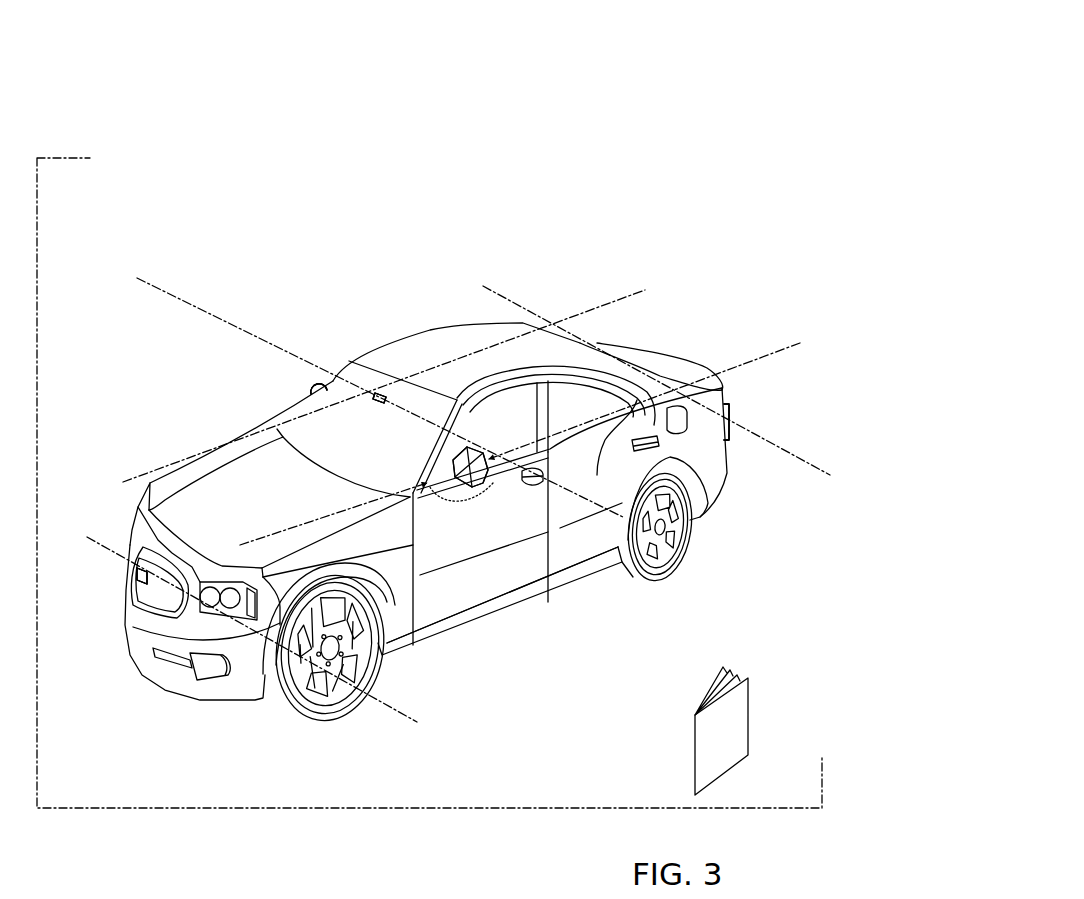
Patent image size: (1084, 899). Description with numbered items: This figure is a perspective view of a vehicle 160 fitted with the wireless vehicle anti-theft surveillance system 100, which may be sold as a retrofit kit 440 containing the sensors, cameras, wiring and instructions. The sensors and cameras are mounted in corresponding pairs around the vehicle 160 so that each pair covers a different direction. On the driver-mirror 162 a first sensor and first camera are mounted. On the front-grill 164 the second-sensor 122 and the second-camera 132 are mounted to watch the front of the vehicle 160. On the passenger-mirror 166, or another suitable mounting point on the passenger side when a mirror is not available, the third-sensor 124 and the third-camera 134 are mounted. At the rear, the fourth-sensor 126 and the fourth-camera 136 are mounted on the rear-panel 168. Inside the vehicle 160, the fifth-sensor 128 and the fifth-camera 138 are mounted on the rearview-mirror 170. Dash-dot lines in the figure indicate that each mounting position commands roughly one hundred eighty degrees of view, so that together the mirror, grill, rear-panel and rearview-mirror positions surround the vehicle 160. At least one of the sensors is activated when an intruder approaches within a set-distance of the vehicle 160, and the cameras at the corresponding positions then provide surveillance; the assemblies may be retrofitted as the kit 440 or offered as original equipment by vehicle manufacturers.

The wireless vehicle anti-theft surveillance system 100 is at (652, 80).
The kit 440 is at (664, 122).
The second-sensor 122 is at (141, 567).
The second-camera 132 is at (136, 576).
The front-grill 164 is at (146, 597).
The third-sensor 124 is at (306, 393).
The third-camera 134 is at (304, 400).
The passenger-mirror 166 is at (313, 378).
The fifth-camera 138 is at (370, 390).
The rearview-mirror 170 is at (365, 389).
The fifth-sensor 128 is at (369, 402).
The driver-mirror 162 is at (462, 446).
The fourth-sensor 126 is at (733, 408).
The rear-panel 168 is at (734, 423).
The fourth-camera 136 is at (735, 437).
The vehicle 160 is at (606, 577).